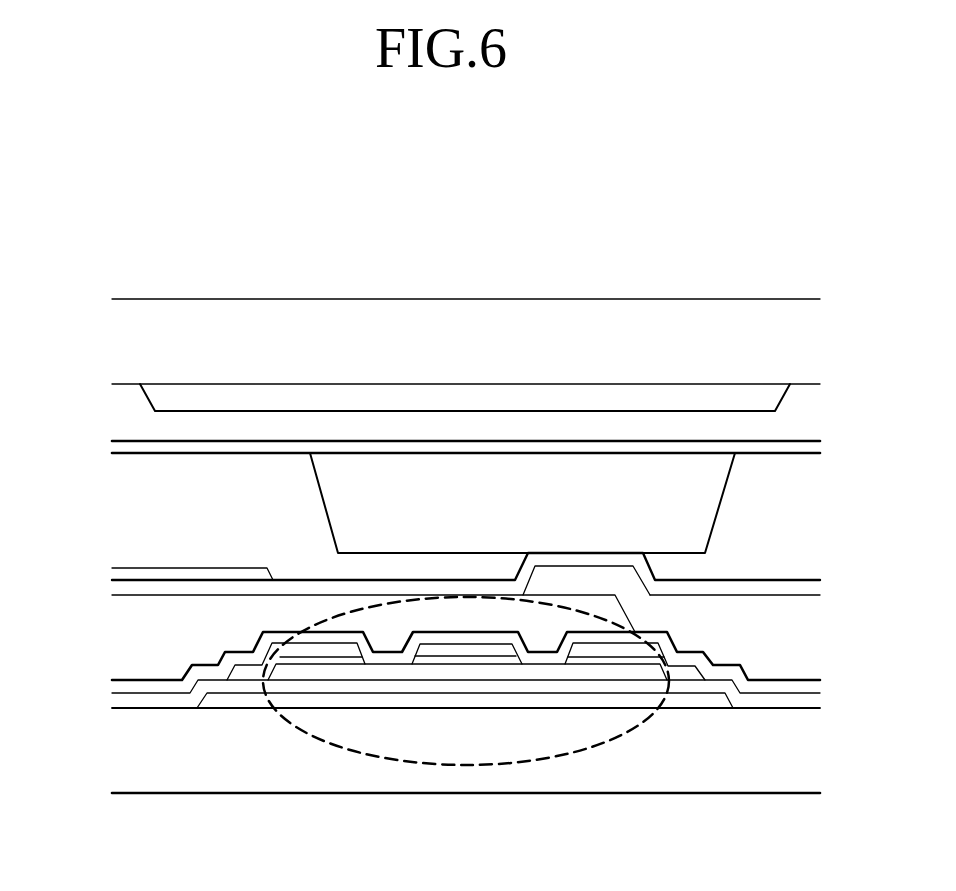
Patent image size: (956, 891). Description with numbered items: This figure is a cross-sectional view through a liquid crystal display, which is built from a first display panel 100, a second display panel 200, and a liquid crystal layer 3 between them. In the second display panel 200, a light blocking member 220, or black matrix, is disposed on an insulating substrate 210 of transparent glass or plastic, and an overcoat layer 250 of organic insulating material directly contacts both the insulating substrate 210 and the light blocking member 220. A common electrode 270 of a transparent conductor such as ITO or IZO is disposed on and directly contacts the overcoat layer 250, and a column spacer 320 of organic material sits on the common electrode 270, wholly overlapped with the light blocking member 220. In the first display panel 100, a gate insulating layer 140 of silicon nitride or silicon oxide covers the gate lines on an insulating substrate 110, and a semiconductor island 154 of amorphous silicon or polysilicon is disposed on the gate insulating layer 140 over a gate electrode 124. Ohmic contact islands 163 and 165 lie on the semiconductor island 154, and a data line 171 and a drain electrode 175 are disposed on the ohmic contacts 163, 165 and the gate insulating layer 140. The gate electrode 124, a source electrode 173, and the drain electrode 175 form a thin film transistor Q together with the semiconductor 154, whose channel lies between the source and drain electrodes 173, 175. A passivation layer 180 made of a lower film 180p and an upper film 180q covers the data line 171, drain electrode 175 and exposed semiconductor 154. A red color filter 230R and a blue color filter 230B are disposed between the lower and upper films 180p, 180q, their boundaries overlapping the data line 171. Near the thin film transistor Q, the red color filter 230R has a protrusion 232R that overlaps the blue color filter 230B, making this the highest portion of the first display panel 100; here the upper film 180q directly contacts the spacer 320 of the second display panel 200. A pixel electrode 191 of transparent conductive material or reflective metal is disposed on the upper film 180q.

The second display panel 200 is at (106, 299).
The insulating substrate 210 is at (415, 325).
The light blocking member 220 is at (283, 397).
The overcoat layer 250 is at (197, 427).
The common electrode 270 is at (675, 447).
The liquid crystal layer 3 is at (106, 455).
The column spacer 320 is at (705, 490).
The protrusion 232R is at (562, 580).
The pixel electrode 191 is at (137, 573).
The first display panel 100 is at (106, 793).
The blue color filter 230B is at (183, 615).
The red color filter 230R is at (760, 612).
The passivation layer 180 is at (235, 510).
The upper film 180q is at (245, 590).
The lower film 180p is at (292, 630).
The insulating substrate 110 is at (770, 768).
The gate electrode 124 is at (568, 700).
The gate insulating layer 140 is at (155, 700).
The semiconductor island 154 is at (392, 672).
The ohmic contact island 163 is at (327, 662).
The ohmic contact island 165 is at (455, 662).
The source electrode 173 is at (245, 672).
The drain electrode 175 is at (490, 650).
The data line 171 is at (685, 672).
The thin film transistor Q is at (303, 726).